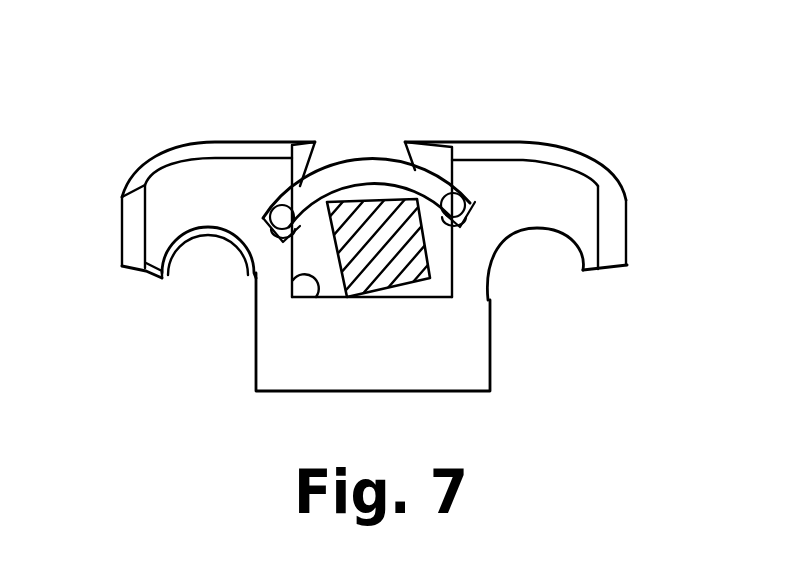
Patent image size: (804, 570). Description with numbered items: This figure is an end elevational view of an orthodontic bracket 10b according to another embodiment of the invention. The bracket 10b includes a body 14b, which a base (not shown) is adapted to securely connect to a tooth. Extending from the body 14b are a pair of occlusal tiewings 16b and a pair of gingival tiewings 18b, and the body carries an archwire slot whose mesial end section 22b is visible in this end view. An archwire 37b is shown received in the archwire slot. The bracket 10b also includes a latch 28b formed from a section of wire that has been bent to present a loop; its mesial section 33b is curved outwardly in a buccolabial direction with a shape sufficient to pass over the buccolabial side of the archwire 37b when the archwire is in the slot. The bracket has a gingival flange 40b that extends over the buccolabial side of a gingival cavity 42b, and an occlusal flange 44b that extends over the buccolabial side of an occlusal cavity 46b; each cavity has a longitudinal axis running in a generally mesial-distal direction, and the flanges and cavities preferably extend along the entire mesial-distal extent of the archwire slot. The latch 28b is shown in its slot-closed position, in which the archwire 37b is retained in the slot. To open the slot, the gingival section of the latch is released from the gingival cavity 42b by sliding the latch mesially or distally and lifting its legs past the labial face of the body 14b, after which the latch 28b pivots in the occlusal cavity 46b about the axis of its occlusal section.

The orthodontic bracket 10b is at (200, 72).
The body 14b is at (280, 360).
The occlusal tiewings 16b is at (134, 210).
The gingival tiewings 18b is at (574, 170).
The mesial end section 22b is at (312, 307).
The latch 28b is at (387, 138).
The mesial section 33b is at (357, 163).
The archwire 37b is at (396, 257).
The gingival flange 40b is at (430, 145).
The gingival cavity 42b is at (436, 225).
The occlusal flange 44b is at (304, 143).
The occlusal cavity 46b is at (296, 244).